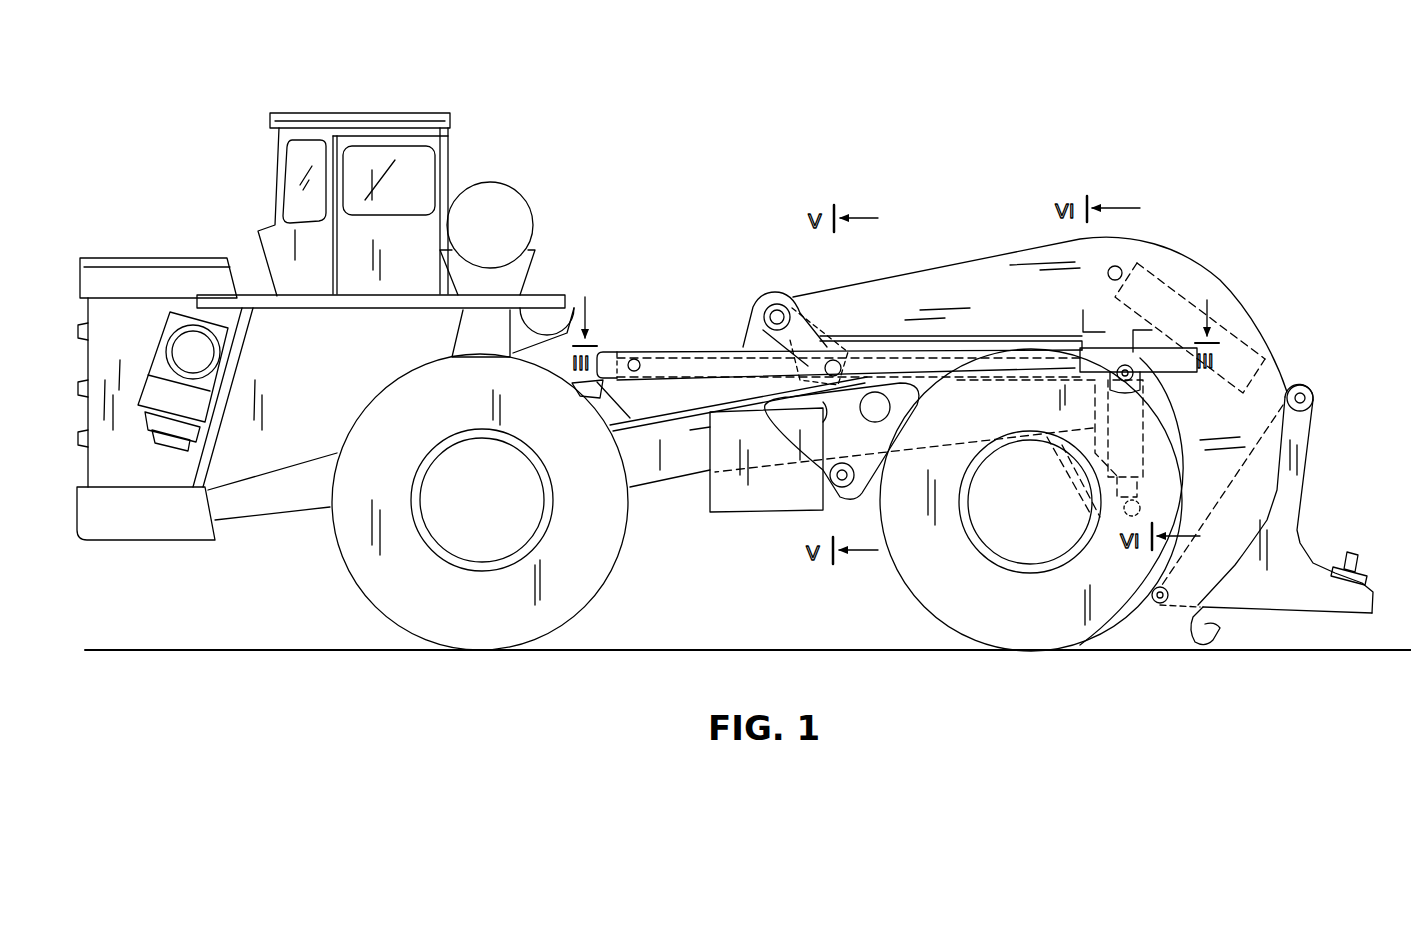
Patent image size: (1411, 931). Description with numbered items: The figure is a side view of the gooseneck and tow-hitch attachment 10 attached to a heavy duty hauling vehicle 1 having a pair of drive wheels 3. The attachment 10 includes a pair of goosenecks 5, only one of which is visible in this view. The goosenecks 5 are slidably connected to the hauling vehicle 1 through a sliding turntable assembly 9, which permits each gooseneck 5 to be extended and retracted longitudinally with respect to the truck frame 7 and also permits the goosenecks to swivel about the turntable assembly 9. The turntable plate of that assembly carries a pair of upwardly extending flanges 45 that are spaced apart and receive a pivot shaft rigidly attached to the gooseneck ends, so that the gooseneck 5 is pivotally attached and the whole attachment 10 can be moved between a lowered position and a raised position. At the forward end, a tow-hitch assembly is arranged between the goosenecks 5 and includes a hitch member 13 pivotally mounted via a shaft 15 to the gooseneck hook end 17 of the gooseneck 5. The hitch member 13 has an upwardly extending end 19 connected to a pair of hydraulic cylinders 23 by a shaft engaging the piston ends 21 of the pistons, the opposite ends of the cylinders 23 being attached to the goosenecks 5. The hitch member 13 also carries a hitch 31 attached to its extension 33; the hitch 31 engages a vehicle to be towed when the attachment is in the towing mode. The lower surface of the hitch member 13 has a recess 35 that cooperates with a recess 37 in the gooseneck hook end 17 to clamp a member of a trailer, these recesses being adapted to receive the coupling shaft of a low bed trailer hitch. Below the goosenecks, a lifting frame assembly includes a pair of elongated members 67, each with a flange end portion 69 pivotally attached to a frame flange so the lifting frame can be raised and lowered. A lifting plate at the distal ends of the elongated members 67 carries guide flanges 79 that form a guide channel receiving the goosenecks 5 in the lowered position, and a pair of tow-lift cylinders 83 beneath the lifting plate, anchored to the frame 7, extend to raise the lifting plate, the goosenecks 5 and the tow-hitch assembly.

The heavy duty hauling vehicle 1 is at (506, 138).
The drive wheels 3 is at (880, 573).
The gooseneck 5 is at (994, 283).
The truck frame 7 is at (688, 470).
The sliding turntable assembly 9 is at (745, 275).
The gooseneck and tow-hitch attachment 10 is at (1099, 110).
The hitch member 13 is at (1307, 474).
The shaft 15 is at (1158, 592).
The gooseneck hook end 17 is at (1209, 632).
The upwardly extending end 19 is at (1309, 388).
The piston ends 21 is at (1265, 335).
The hydraulic cylinders 23 is at (1205, 272).
The hitch 31 is at (1360, 553).
The extension 33 is at (1308, 598).
The recess 35 is at (1208, 609).
The recess 37 is at (1197, 612).
The flanges 45 is at (750, 318).
The elongated members 67 is at (984, 352).
The flange end portion 69 is at (812, 335).
The guide flanges 79 is at (1188, 378).
The tow-lift cylinders 83 is at (1062, 470).